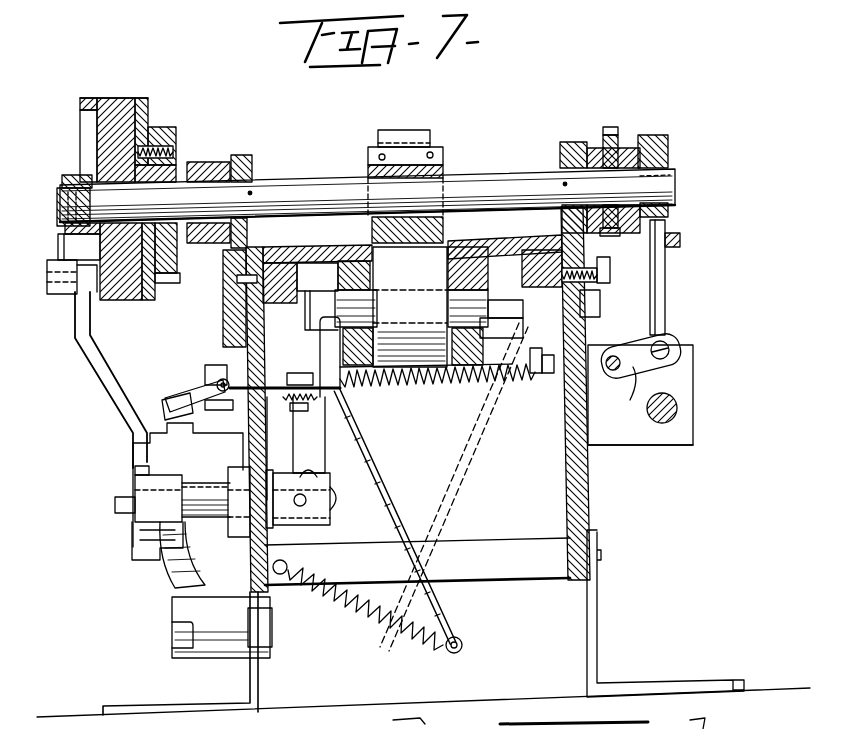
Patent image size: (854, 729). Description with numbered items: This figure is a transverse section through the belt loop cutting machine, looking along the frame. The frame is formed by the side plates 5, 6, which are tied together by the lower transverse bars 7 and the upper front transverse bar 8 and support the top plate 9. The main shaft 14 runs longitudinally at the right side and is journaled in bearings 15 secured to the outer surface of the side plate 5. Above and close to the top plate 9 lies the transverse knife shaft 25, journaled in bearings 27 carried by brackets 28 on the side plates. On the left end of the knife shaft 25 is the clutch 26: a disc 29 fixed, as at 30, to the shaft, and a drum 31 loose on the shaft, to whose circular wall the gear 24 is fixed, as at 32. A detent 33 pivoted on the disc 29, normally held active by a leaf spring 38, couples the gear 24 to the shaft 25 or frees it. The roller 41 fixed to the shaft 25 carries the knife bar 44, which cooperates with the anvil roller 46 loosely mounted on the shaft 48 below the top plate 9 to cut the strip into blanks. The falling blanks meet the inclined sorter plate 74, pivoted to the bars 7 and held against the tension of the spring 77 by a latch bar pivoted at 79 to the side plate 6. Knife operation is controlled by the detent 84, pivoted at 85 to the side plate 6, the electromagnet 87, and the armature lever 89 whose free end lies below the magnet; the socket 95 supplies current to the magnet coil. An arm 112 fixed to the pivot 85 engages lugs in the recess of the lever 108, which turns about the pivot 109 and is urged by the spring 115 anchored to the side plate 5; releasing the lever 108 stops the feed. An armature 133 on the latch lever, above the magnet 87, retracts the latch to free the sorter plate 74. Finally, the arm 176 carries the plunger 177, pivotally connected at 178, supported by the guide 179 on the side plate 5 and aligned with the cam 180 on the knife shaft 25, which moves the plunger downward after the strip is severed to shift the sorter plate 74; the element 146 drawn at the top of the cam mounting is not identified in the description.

The side plate 5 is at (574, 504).
The side plate 6 is at (263, 450).
The lower transverse bar 7 is at (510, 550).
The upper front transverse bar 8 is at (512, 320).
The top plate 9 is at (337, 249).
The main shaft 14 is at (680, 412).
The bearing 15 is at (627, 437).
The gear 24 is at (176, 126).
The knife shaft 25 is at (313, 186).
The clutch 26 is at (160, 100).
The bearing 27 is at (247, 153).
The bracket 28 is at (240, 310).
The disc 29 is at (108, 150).
The fixing of disc 30 is at (66, 176).
The drum 31 is at (118, 98).
The fixing of gear 32 is at (177, 146).
The detent 33 is at (65, 243).
The leaf spring 38 is at (53, 293).
The roller 41 is at (443, 166).
The knife bar 44 is at (423, 130).
The anvil roller 46 is at (437, 268).
The shaft 48 is at (497, 297).
The sorter plate 74 is at (395, 491).
The spring 77 is at (347, 604).
The pivot 79 is at (221, 380).
The detent 84 is at (97, 383).
The pivot 85 is at (115, 507).
The electromagnet 87 is at (140, 542).
The armature lever 89 is at (170, 592).
The socket 95 is at (214, 657).
The lever 108 is at (284, 402).
The pivot 109 is at (345, 420).
The arm 112 is at (328, 450).
The spring 115 is at (420, 390).
The armature 133 is at (185, 393).
The screw 146 is at (615, 127).
The arm 176 is at (633, 367).
The plunger 177 is at (667, 291).
The pivotal connection 178 is at (682, 349).
The guide 179 is at (670, 228).
The cam 180 is at (668, 148).